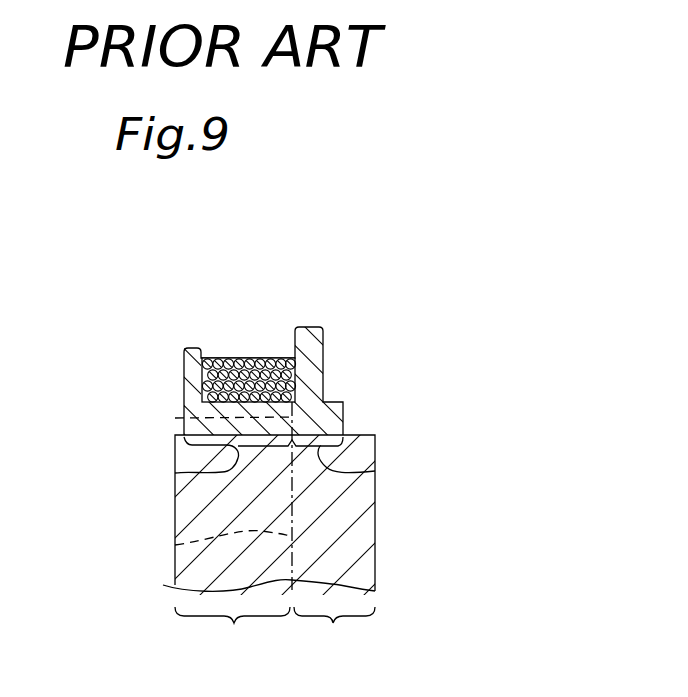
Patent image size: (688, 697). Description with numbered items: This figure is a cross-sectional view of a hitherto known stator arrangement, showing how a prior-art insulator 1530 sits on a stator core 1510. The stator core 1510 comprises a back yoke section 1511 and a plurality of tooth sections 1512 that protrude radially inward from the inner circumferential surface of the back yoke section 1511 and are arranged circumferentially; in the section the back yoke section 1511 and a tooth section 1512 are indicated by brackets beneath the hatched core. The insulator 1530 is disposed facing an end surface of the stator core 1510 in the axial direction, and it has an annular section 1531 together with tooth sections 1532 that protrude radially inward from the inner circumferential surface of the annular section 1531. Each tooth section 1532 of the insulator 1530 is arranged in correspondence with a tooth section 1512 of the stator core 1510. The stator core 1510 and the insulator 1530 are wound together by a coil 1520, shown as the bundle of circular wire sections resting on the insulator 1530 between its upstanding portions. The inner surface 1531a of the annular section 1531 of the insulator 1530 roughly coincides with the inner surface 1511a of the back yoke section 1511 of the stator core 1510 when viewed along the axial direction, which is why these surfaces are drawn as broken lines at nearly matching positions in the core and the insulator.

The stator core 1510 is at (377, 534).
The back yoke section 1511 is at (334, 635).
The inner surface of the back yoke section 1511a is at (175, 545).
The tooth section 1512 is at (232, 635).
The coil 1520 is at (251, 359).
The insulator 1530 is at (330, 361).
The annular section 1531 is at (375, 471).
The inner surface of the annular section 1531a is at (175, 418).
The tooth section 1532 is at (176, 473).